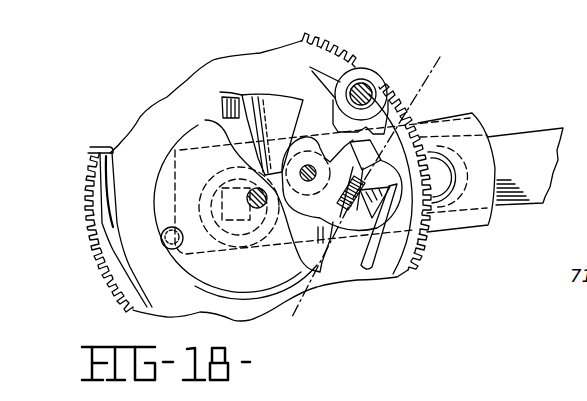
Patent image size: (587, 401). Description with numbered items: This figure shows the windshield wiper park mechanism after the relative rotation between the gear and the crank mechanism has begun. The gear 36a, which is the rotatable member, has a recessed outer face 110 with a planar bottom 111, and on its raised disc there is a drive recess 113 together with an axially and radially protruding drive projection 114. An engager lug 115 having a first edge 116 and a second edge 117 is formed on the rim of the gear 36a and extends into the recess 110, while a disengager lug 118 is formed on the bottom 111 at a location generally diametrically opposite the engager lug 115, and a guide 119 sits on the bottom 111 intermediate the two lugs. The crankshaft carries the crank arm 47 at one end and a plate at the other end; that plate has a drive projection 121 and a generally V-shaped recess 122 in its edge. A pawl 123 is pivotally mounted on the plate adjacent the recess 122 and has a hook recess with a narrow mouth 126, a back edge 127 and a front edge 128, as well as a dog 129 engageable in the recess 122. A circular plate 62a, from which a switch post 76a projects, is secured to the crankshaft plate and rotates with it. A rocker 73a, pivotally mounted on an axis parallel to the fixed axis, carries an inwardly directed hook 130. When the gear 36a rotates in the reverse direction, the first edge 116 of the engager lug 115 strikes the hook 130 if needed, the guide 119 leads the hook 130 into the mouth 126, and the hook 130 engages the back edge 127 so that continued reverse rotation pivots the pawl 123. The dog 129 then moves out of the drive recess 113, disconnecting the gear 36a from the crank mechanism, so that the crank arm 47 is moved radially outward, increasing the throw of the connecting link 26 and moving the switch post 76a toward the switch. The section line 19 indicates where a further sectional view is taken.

The recessed outer face 110 is at (90, 147).
The planar bottom 111 is at (160, 129).
The drive recess 113 is at (287, 120).
The drive projection 114 is at (226, 97).
The engager lug 115 is at (105, 222).
The first edge 116 is at (113, 228).
The second edge 117 is at (112, 203).
The disengager lug 118 is at (363, 268).
The guide 119 is at (312, 68).
The drive projection 121 is at (267, 97).
The V-shaped recess 122 is at (310, 107).
The pawl 123 is at (269, 196).
The narrow mouth 126 is at (371, 189).
The back edge 127 is at (317, 178).
The front edge 128 is at (350, 154).
The dog 129 is at (327, 142).
The hook 130 is at (364, 195).
The section line 19- 19 is at (478, 62).
The connecting link 26 is at (543, 128).
The gear 36a is at (120, 297).
The crank arm 47 is at (470, 225).
The circular plate 62a is at (205, 283).
The rocker 73a is at (398, 100).
The switch post 76a is at (250, 187).